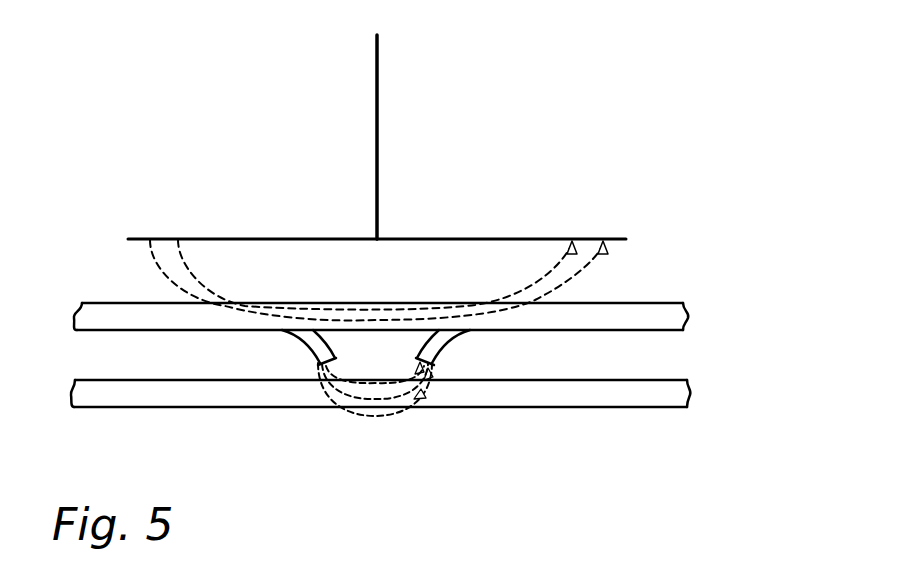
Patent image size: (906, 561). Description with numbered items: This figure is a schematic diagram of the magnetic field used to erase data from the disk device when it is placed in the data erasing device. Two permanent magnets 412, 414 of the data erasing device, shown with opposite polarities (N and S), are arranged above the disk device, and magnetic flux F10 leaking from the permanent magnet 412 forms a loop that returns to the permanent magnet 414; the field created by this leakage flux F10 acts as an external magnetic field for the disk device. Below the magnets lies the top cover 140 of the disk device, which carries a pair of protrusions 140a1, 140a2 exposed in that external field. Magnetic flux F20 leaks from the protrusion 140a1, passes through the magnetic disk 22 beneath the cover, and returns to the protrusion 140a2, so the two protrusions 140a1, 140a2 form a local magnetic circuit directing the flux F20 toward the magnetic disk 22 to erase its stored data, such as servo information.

The permanent magnet 412 is at (263, 127).
The permanent magnet 414 is at (490, 128).
The magnetic flux F10 is at (580, 280).
The top cover 140 is at (685, 316).
The protrusion 140a1 is at (296, 340).
The protrusion 140a2 is at (447, 338).
The magnetic disk 22 is at (688, 392).
The magnetic flux F20 is at (417, 399).